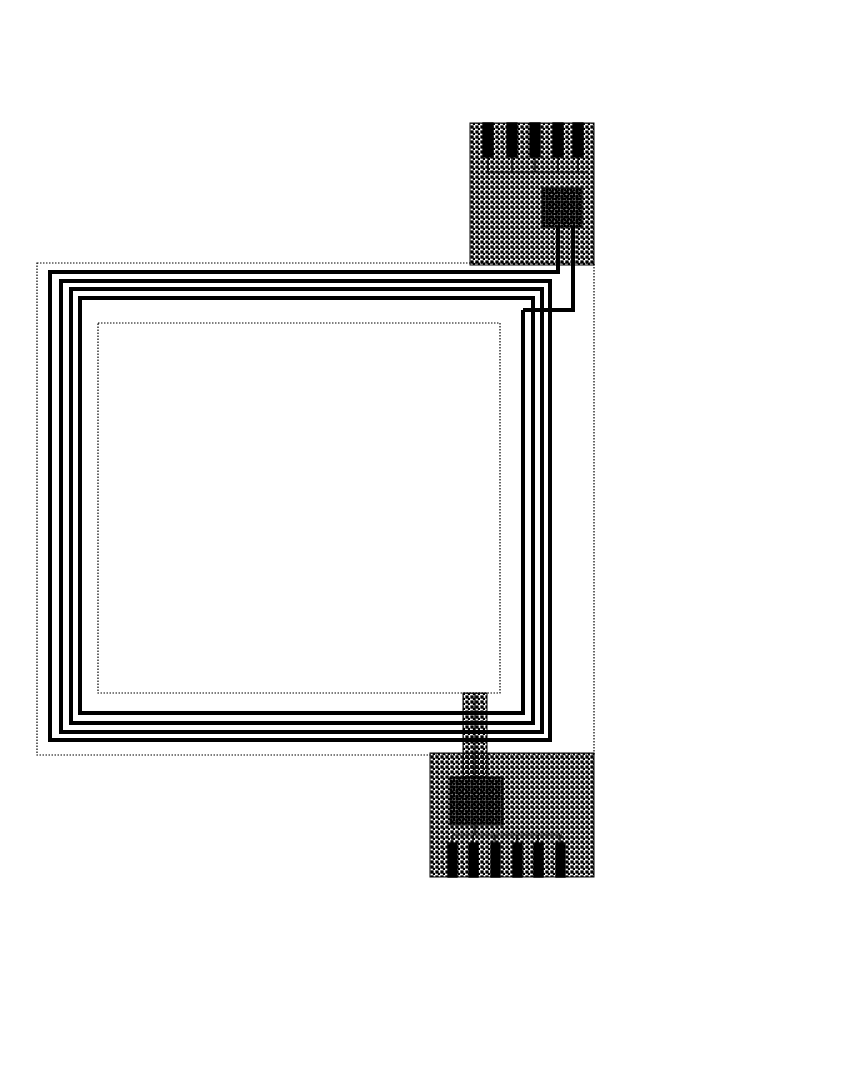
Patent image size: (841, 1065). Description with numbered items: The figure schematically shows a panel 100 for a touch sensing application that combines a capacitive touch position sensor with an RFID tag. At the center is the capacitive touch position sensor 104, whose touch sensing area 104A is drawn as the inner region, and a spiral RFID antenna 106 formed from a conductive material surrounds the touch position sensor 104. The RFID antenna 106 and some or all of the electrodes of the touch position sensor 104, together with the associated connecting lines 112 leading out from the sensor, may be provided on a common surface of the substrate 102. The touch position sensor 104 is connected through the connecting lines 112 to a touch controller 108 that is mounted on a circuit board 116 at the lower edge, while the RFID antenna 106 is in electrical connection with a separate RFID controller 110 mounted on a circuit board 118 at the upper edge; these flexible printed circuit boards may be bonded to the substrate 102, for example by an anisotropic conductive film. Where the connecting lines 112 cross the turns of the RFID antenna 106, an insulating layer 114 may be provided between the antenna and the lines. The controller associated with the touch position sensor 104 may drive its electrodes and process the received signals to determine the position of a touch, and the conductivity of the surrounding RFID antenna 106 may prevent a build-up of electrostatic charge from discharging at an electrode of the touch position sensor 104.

The panel 100 is at (398, 500).
The substrate 102 is at (595, 378).
The capacitive touch position sensor 104 is at (500, 452).
The touch sensing area 104A is at (397, 531).
The RFID antenna 106 is at (560, 288).
The touch controller 108 is at (451, 820).
The RFID controller 110 is at (585, 210).
The connecting lines 112 is at (468, 773).
The insulating layer 114 is at (456, 745).
The circuit board 116 is at (557, 800).
The circuit board 118 is at (472, 220).